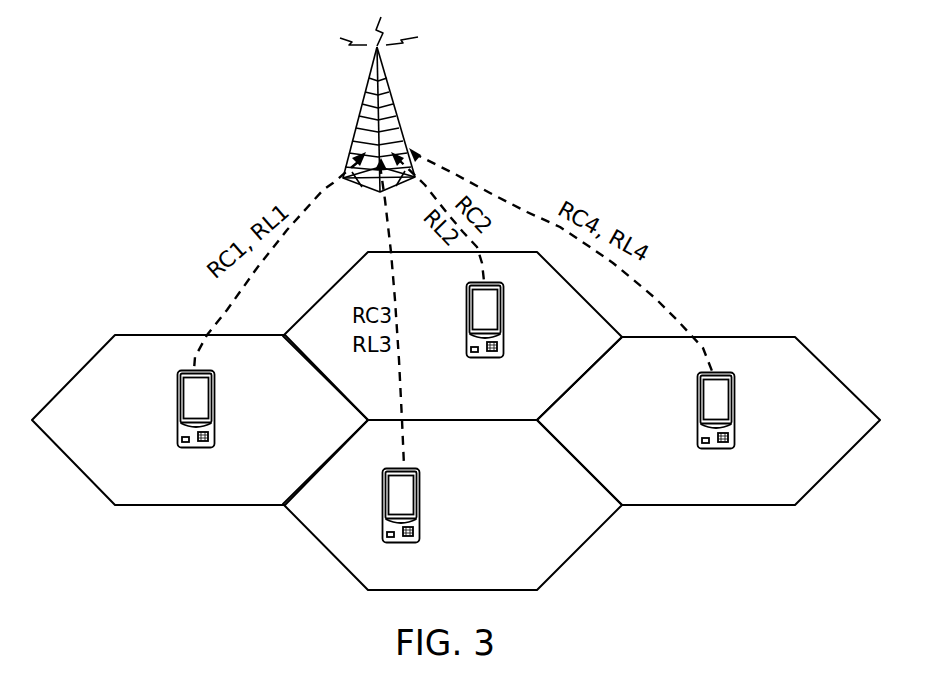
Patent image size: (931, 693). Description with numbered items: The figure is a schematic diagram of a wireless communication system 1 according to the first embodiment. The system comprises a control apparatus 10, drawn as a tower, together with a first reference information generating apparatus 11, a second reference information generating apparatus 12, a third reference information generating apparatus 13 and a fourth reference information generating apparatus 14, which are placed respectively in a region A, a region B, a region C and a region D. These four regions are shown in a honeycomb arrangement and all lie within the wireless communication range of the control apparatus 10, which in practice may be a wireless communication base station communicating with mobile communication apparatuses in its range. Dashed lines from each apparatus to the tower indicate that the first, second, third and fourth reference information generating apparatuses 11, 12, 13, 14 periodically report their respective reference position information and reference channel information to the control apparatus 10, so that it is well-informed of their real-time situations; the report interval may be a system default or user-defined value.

The wireless communication system 1 is at (588, 124).
The control apparatus 10 is at (367, 84).
The first reference information generating apparatus 11 is at (177, 393).
The second reference information generating apparatus 12 is at (466, 298).
The third reference information generating apparatus 13 is at (382, 488).
The fourth reference information generating apparatus 14 is at (697, 386).